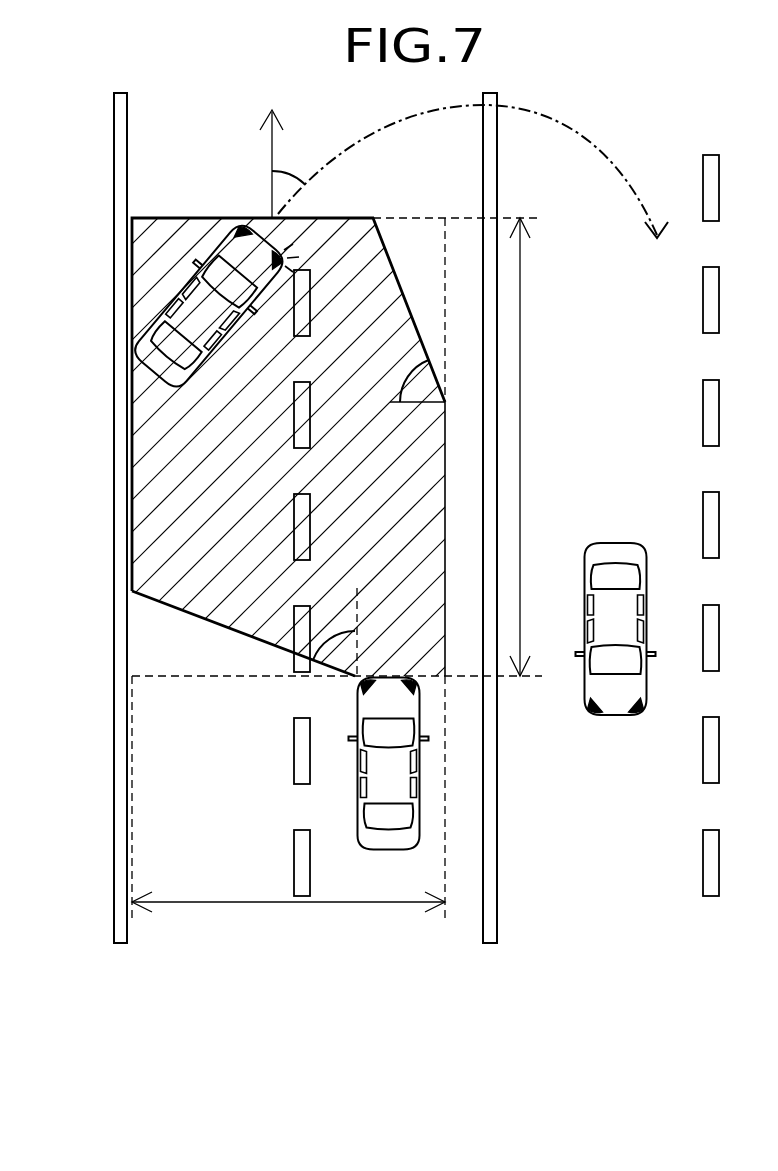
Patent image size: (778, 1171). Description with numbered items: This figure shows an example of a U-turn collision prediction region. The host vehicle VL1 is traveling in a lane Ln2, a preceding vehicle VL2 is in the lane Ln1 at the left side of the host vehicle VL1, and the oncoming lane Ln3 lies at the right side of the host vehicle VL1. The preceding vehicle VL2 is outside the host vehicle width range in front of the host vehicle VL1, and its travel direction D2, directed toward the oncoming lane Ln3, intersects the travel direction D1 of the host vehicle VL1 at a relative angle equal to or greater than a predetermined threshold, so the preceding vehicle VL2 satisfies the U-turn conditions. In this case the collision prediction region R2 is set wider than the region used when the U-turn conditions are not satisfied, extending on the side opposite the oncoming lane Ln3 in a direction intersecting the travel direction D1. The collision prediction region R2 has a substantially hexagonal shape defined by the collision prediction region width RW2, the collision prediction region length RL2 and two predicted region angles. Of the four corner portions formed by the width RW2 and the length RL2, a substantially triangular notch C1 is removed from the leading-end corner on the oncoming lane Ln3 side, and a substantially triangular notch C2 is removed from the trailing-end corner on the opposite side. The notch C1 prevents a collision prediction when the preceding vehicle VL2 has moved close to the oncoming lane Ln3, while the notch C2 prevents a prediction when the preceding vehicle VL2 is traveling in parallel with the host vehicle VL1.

The lane Ln1 is at (228, 1022).
The lane Ln2 is at (396, 1022).
The oncoming lane Ln3 is at (563, 1022).
The collision prediction region R2 is at (167, 437).
The notch C1 is at (405, 237).
The notch C2 is at (242, 658).
The collision prediction region width RW2 is at (288, 589).
The collision prediction region length RL2 is at (535, 447).
The travel direction of the host vehicle D1 is at (255, 164).
The travel direction of the preceding vehicle D2 is at (473, 171).
The host vehicle VL1 is at (357, 761).
The preceding vehicle VL2 is at (153, 307).